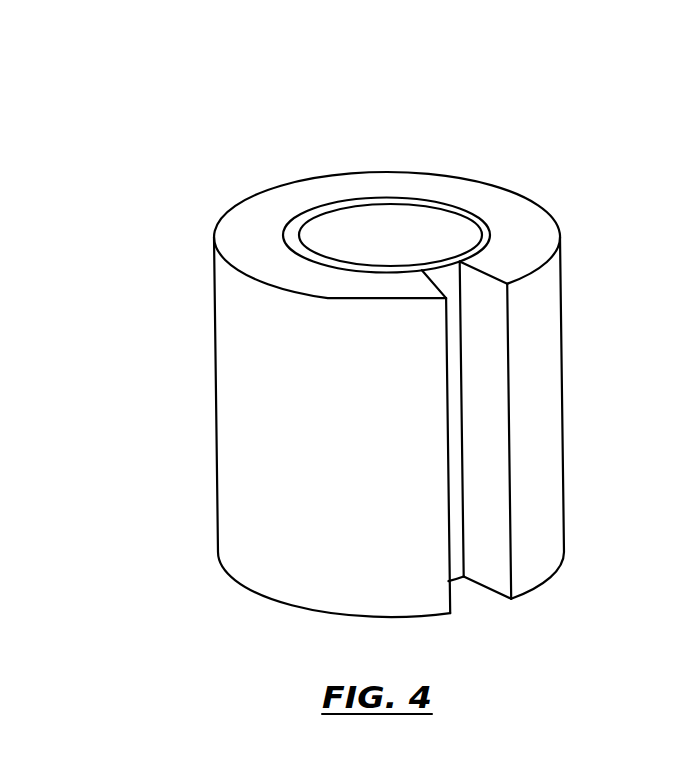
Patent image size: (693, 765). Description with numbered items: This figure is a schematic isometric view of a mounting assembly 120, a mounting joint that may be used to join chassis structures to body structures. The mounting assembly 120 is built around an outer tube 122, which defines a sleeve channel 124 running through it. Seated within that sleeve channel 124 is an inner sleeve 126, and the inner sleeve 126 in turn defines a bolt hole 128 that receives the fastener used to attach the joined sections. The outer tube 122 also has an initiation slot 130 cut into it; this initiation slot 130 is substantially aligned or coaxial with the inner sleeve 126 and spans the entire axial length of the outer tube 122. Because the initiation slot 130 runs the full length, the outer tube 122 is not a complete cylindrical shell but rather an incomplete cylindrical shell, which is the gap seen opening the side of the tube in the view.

The mounting assembly 120 is at (584, 136).
The outer tube 122 is at (248, 380).
The sleeve channel 124 is at (489, 233).
The inner sleeve 126 is at (294, 240).
The bolt hole 128 is at (341, 228).
The initiation slot 130 is at (438, 291).